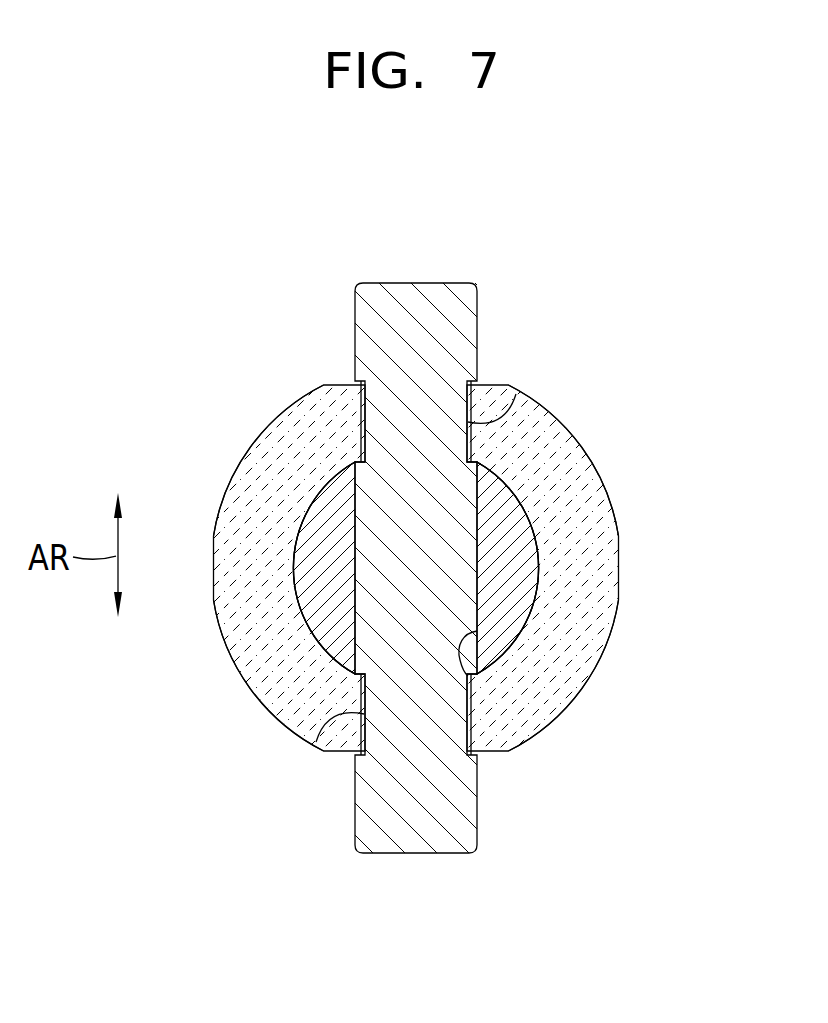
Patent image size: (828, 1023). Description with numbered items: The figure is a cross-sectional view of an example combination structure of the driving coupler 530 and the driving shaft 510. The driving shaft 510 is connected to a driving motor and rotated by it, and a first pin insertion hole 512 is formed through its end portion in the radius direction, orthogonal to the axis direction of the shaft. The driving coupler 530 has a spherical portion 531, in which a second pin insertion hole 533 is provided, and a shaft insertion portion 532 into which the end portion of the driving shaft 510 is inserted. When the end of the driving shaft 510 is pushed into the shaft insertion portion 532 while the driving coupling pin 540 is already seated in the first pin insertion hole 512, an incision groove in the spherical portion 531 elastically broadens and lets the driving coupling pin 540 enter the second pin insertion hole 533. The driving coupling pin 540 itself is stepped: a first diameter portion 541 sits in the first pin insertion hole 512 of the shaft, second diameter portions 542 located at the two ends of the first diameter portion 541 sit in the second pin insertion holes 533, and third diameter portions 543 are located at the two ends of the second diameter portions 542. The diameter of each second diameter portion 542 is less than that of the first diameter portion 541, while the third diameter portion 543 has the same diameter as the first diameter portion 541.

The driving shaft 510 is at (515, 597).
The first pin insertion hole 512 is at (480, 613).
The driving coupler 530 is at (595, 527).
The spherical portion 531 is at (598, 468).
The shaft insertion portion 532 is at (514, 506).
The second pin insertion hole 533 is at (514, 392).
The driving coupling pin 540 is at (408, 872).
The first diameter portion 541 is at (473, 686).
The second diameter portion 542 is at (468, 424).
The third diameter portion 543 is at (355, 328).